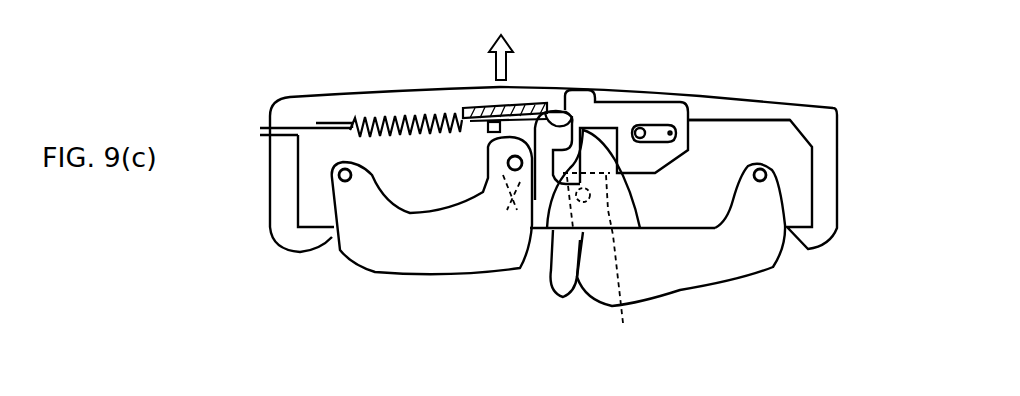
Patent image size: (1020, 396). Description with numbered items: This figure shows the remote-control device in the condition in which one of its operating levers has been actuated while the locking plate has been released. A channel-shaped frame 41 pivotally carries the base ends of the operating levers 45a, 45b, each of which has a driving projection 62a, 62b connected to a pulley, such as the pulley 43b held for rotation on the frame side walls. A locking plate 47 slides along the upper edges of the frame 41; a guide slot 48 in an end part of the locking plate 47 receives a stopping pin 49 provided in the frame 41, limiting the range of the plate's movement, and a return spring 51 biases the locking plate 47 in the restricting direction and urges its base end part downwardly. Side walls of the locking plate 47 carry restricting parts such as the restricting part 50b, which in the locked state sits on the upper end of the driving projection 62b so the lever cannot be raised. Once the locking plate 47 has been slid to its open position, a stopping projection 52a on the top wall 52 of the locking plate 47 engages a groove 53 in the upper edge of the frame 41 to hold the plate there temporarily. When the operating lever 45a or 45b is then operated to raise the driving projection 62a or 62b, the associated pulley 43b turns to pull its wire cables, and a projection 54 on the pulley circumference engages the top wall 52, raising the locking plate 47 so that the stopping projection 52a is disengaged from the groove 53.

The frame 41 is at (748, 120).
The pulley 43b is at (552, 270).
The operating lever 45a is at (725, 285).
The operating lever 45b is at (407, 277).
The locking plate 47 is at (622, 113).
The guide slot 48 is at (712, 120).
The stopping pin 49 is at (642, 130).
The restricting part 50b is at (614, 228).
The return spring 51 is at (400, 120).
The top wall 52 is at (542, 113).
The stopping projection 52a is at (487, 125).
The groove 53 is at (485, 120).
The projection 54 is at (558, 121).
The driving projection 62a is at (631, 267).
The driving projection 62b is at (518, 193).